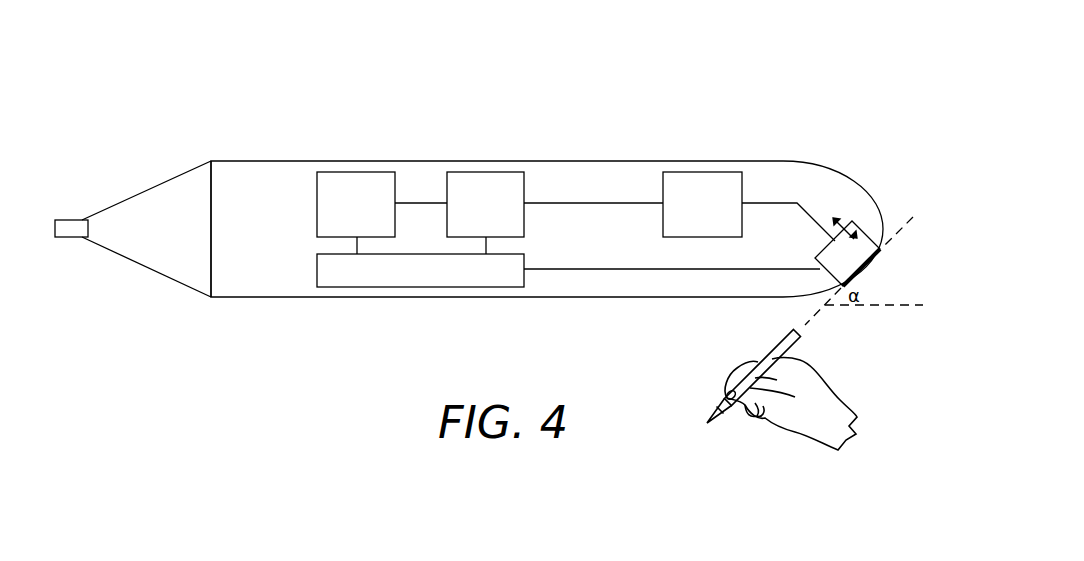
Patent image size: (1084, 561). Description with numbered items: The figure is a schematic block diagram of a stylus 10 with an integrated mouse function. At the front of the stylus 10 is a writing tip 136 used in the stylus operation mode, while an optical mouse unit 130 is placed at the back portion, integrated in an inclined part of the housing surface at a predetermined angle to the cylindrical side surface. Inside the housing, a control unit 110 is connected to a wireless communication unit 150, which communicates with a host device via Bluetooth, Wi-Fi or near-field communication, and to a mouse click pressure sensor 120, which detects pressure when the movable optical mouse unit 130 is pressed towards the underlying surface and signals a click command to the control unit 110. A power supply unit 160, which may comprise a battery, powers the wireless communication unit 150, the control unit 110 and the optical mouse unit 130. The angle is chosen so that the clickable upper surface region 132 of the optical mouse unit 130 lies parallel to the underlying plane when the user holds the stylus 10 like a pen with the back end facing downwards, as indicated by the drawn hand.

The stylus 10 is at (210, 101).
The writing tip 136 is at (65, 229).
The wireless communication unit 150 is at (336, 229).
The control unit 110 is at (465, 229).
The mouse click pressure sensor 120 is at (682, 229).
The power supply unit 160 is at (428, 280).
The optical mouse unit 130 is at (868, 246).
The clickable upper surface region 132 is at (867, 263).